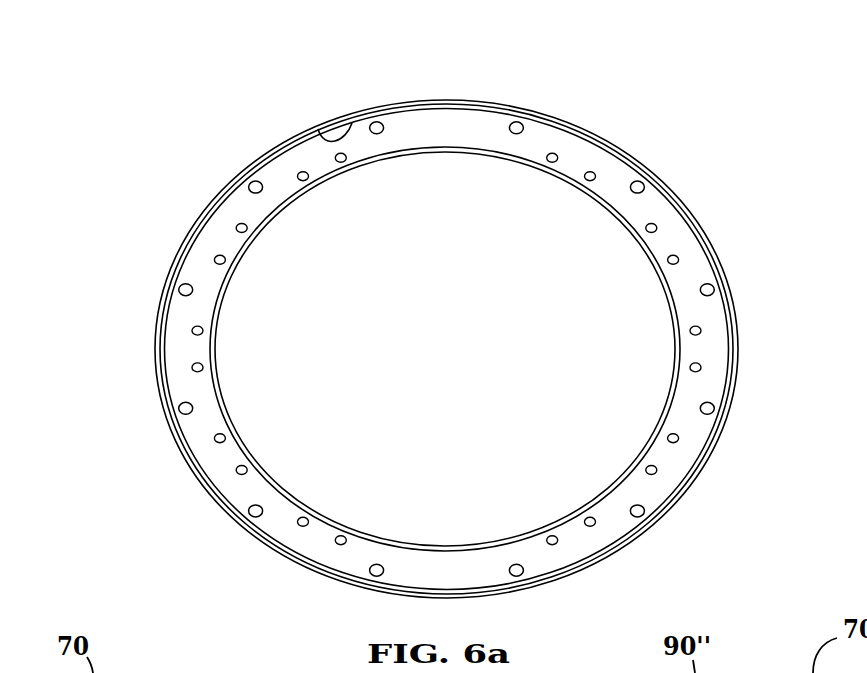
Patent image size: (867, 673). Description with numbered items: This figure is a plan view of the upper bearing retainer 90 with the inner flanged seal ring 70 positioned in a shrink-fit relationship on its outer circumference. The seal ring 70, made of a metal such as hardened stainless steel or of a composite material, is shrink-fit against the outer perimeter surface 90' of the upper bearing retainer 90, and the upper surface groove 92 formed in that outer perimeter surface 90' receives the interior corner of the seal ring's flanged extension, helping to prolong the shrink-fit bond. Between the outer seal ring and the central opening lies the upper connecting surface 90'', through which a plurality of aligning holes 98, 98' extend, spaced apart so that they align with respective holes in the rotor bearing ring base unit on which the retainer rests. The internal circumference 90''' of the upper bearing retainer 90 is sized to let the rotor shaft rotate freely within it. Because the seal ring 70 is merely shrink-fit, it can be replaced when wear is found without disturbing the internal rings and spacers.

The inner flanged seal ring 70 is at (648, 171).
The upper bearing retainer 90 is at (385, 349).
The outer perimeter surface 90' is at (438, 349).
The upper connecting surface 90'' is at (445, 349).
The internal circumference 90''' is at (445, 349).
The upper surface groove 92 is at (322, 130).
The aligning holes 98 is at (380, 349).
The aligning holes 98' is at (446, 348).